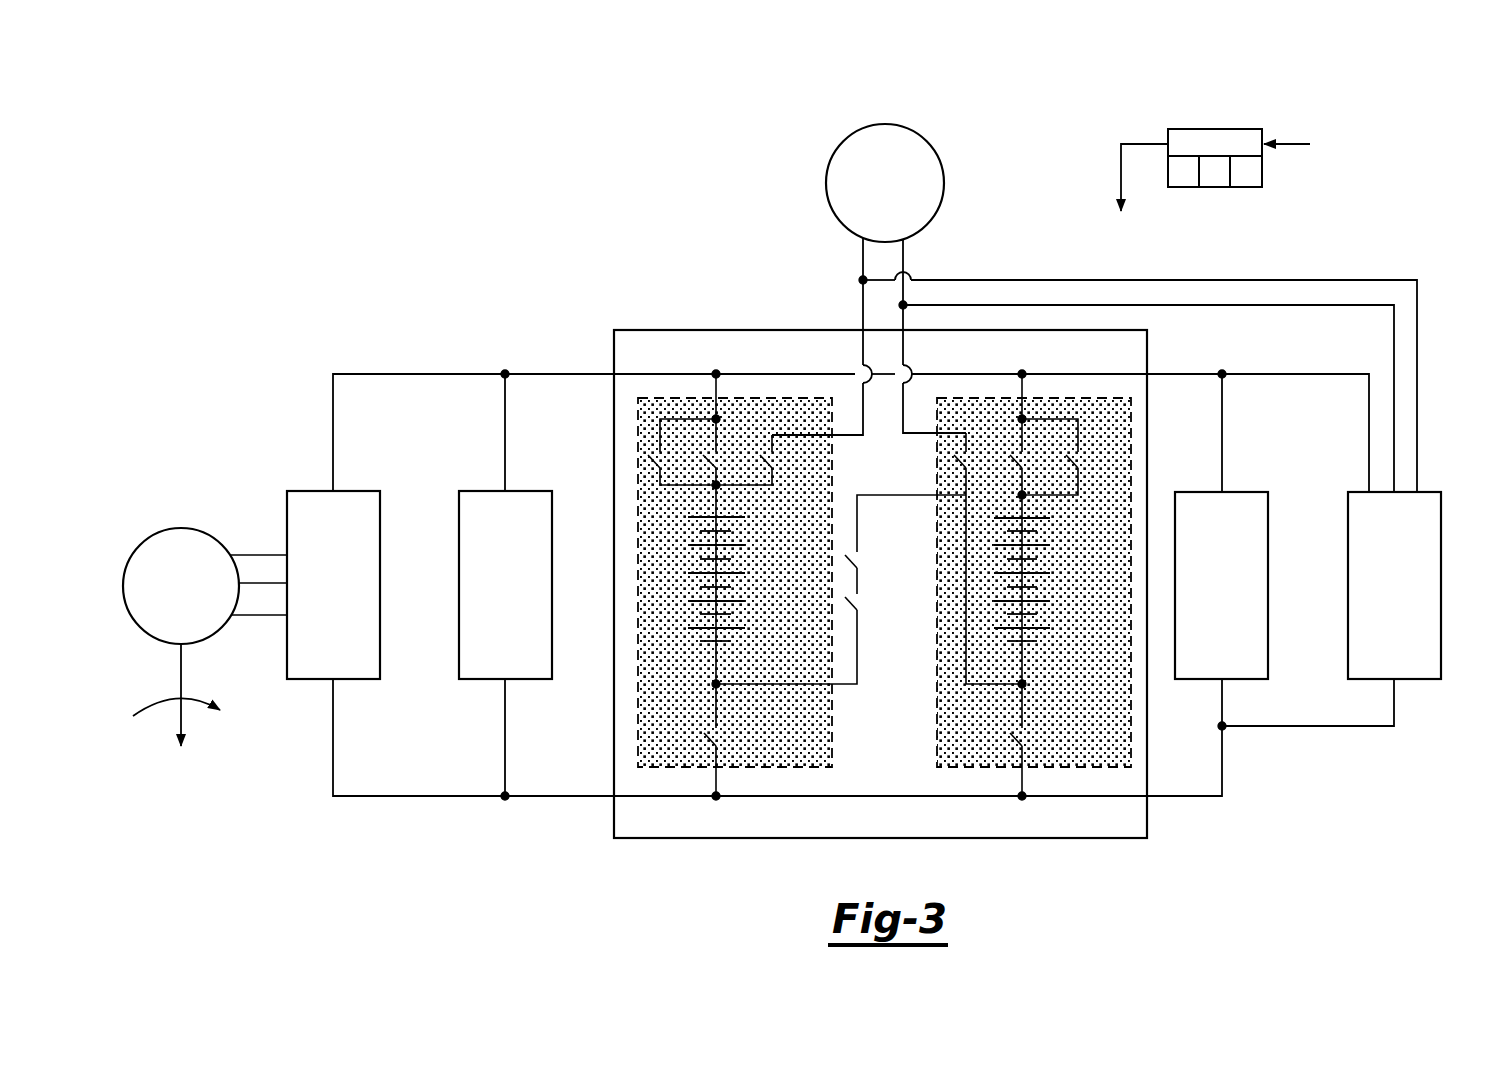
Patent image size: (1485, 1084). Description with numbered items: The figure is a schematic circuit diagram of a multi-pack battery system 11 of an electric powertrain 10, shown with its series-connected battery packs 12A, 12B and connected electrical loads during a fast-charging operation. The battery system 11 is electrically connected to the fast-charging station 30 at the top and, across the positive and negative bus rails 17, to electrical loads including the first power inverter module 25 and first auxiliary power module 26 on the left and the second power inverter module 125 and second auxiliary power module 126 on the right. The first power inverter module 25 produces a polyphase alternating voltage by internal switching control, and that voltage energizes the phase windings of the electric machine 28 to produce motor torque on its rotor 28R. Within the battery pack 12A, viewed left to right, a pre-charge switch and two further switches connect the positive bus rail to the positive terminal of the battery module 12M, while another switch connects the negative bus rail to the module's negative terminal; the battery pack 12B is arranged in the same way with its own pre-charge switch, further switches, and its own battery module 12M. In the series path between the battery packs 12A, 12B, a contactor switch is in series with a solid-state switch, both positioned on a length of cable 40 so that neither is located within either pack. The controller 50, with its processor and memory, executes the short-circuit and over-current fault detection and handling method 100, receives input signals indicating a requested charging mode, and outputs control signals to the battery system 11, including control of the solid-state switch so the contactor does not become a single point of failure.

The electric powertrain 10 is at (1418, 224).
The multi-pack battery system 11 is at (712, 329).
The battery pack 12A is at (790, 397).
The battery pack 12B is at (978, 397).
The battery module 12M is at (680, 642).
The bus rail 17 is at (418, 373).
The power inverter module (PIM-A) 25 is at (303, 490).
The auxiliary power module (APM-A) 26 is at (475, 490).
The electric machine 28 is at (178, 526).
The rotor 28R is at (179, 645).
The DCFC station 30 is at (884, 124).
The cable 40 is at (903, 494).
The controller 50 is at (1230, 155).
The short-circuit/over-current fault detection and handling method 100 is at (1184, 173).
The power inverter module (PIM-B) 125 is at (1193, 491).
The auxiliary power module (APM-B) 126 is at (1365, 491).